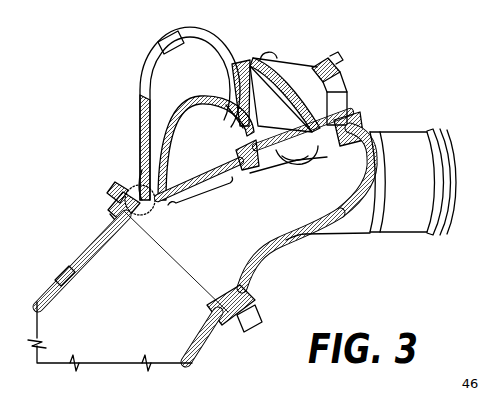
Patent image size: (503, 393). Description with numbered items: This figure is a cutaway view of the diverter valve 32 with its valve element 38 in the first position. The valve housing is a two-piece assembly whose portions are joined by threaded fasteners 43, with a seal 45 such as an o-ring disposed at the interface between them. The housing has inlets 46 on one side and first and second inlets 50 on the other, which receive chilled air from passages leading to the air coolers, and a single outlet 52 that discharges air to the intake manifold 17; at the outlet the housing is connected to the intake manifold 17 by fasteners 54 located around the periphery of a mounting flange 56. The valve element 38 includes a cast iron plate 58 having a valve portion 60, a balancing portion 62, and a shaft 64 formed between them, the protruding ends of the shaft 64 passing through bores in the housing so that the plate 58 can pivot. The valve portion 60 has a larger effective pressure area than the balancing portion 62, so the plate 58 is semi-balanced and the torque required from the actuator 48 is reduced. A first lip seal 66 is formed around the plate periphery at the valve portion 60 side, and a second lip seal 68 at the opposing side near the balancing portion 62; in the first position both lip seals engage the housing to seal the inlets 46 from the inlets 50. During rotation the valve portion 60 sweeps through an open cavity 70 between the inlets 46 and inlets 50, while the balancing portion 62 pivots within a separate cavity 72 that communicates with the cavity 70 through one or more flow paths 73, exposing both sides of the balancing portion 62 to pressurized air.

The intake manifold 17 is at (91, 321).
The diverter valve 32 is at (432, 80).
The valve element 38 is at (259, 118).
The threaded fasteners 43 is at (130, 175).
The seal 45 is at (334, 132).
The inlets 46 is at (150, 47).
The actuator 48 is at (347, 91).
The inlets 50 is at (446, 236).
The outlet 52 is at (248, 290).
The fasteners 54 is at (220, 337).
The mounting flange 56 is at (262, 322).
The plate 58 is at (253, 160).
The valve portion 60 is at (203, 202).
The balancing portion 62 is at (292, 154).
The shaft 64 is at (233, 137).
The first lip seal 66 is at (142, 168).
The second lip seal 68 is at (320, 114).
The open cavity 70 is at (325, 194).
The cavity 72 is at (275, 119).
The flow paths 73 is at (240, 112).